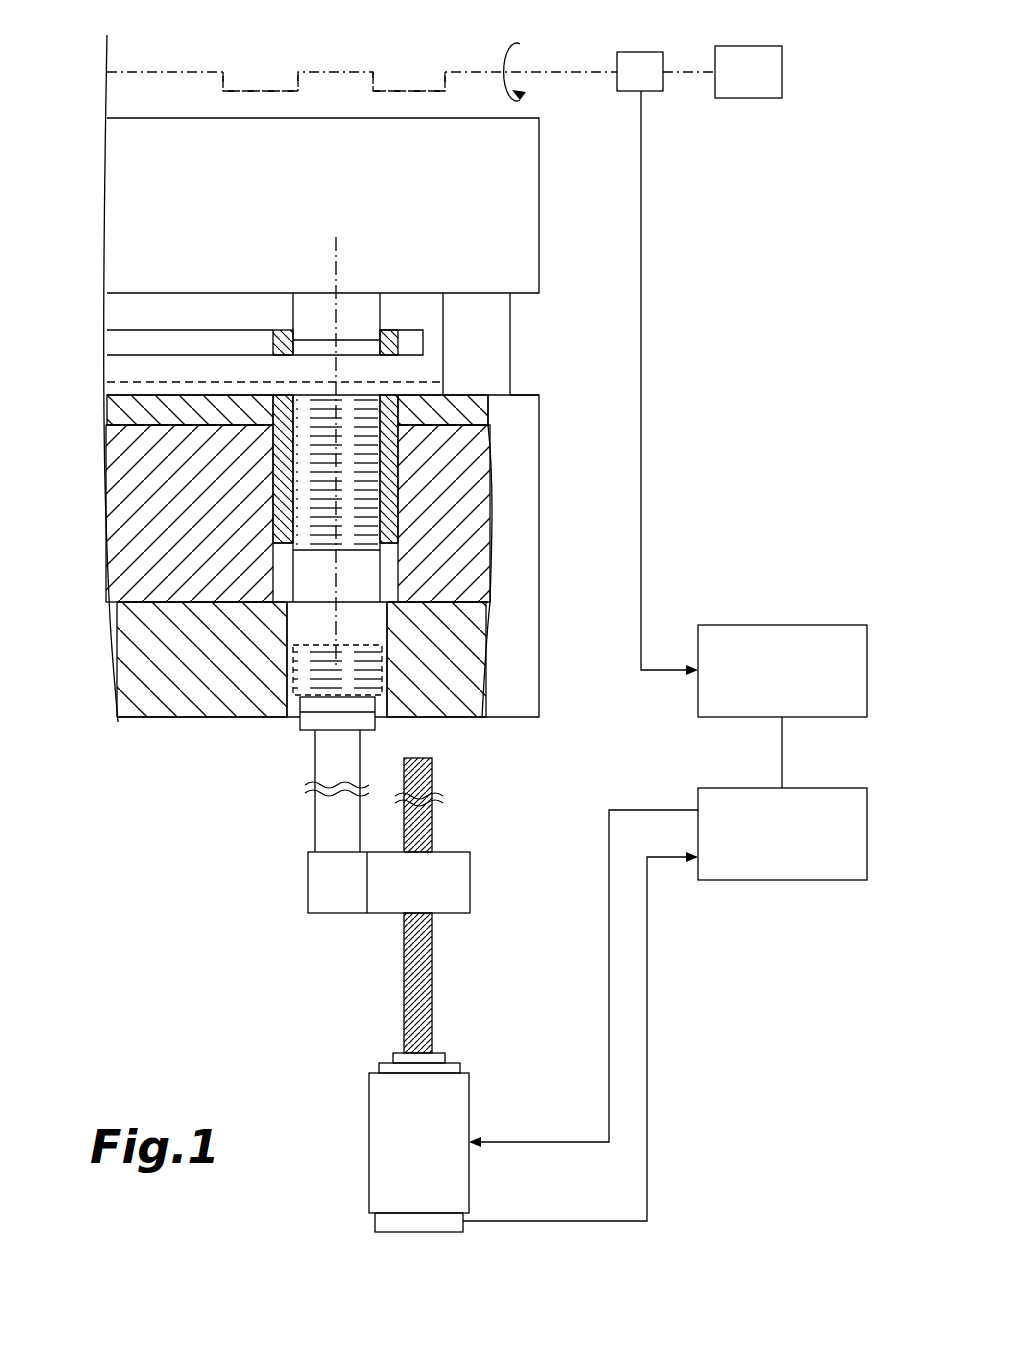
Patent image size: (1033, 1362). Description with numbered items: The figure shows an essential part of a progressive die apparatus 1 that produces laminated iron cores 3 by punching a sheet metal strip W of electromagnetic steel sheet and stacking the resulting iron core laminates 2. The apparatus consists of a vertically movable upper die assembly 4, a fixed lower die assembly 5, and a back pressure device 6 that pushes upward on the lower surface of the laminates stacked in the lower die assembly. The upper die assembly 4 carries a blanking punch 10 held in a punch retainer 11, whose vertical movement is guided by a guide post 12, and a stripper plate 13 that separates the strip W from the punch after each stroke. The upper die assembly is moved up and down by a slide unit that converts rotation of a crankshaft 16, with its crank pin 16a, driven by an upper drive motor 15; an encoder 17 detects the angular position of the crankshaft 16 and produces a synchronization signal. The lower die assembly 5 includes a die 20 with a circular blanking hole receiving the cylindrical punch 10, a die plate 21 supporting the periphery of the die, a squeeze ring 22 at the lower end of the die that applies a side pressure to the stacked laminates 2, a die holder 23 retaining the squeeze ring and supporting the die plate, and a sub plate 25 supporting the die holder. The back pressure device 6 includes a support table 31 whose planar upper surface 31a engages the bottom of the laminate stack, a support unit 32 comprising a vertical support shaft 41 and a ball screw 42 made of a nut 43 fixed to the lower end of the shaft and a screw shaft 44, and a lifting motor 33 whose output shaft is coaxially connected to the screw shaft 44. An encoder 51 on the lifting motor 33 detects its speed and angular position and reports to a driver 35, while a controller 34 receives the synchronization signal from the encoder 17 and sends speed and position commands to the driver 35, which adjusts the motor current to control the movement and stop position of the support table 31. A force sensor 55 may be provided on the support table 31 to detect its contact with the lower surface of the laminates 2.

The progressive die apparatus 1 is at (730, 267).
The iron core laminates 2 is at (355, 408).
The laminated iron core 3 is at (288, 715).
The upper die assembly 4 is at (567, 145).
The lower die assembly 5 is at (551, 571).
The back pressure device 6 is at (399, 999).
The blanking punch 10 is at (362, 296).
The punch retainer 11 is at (525, 267).
The guide post 12 is at (493, 333).
The stripper plate 13 is at (145, 342).
The upper drive motor 15 is at (742, 100).
The crankshaft 16 is at (308, 70).
The crank pin 16a is at (263, 90).
The encoder 17 is at (640, 52).
The die 20 is at (450, 413).
The die plate 21 is at (117, 410).
The squeeze ring 22 is at (392, 483).
The die holder 23 is at (108, 495).
The sub plate 25 is at (130, 650).
The support table 31 is at (372, 745).
The upper surface 31a is at (418, 720).
The support unit 32 is at (399, 893).
The lifting motor 33 is at (462, 1096).
The controller 34 is at (782, 625).
The driver 35 is at (783, 880).
The support shaft 41 is at (322, 838).
The ball screw 42 is at (444, 893).
The nut 43 is at (465, 885).
The screw shaft 44 is at (430, 938).
The encoder 51 is at (448, 1224).
The force sensor 55 is at (298, 720).
The sheet metal strip W is at (120, 386).